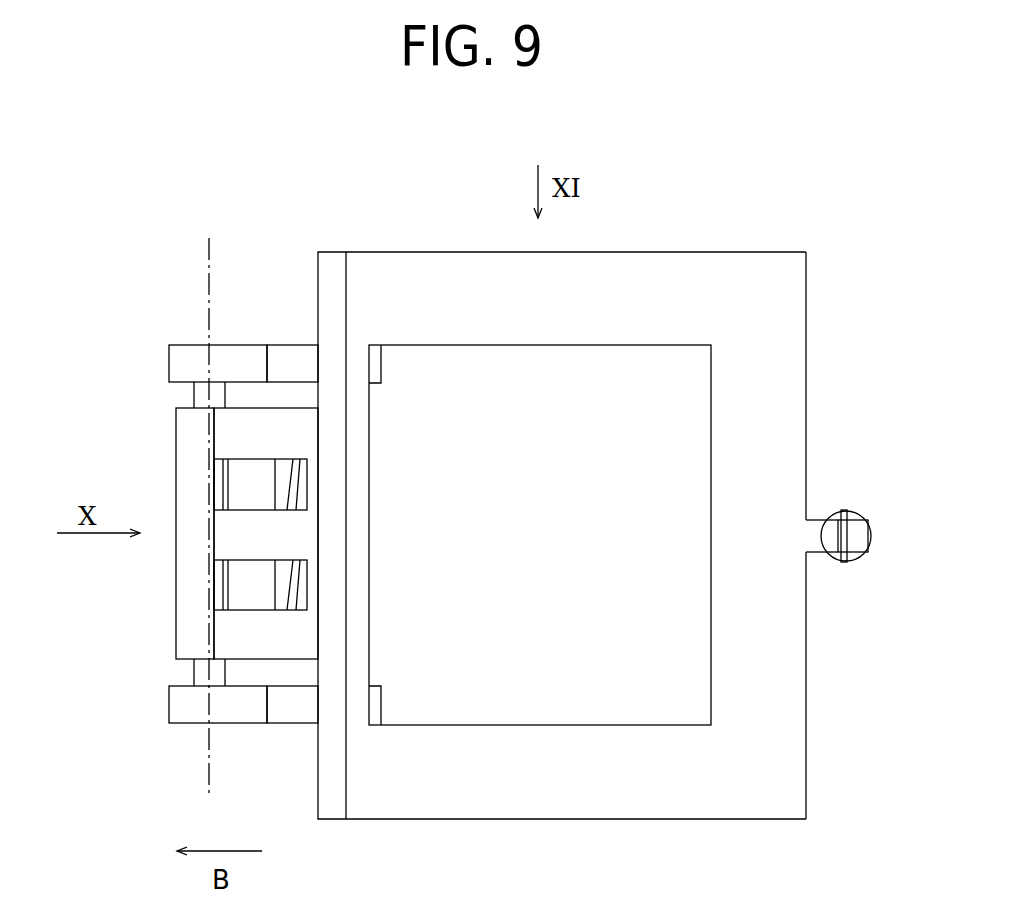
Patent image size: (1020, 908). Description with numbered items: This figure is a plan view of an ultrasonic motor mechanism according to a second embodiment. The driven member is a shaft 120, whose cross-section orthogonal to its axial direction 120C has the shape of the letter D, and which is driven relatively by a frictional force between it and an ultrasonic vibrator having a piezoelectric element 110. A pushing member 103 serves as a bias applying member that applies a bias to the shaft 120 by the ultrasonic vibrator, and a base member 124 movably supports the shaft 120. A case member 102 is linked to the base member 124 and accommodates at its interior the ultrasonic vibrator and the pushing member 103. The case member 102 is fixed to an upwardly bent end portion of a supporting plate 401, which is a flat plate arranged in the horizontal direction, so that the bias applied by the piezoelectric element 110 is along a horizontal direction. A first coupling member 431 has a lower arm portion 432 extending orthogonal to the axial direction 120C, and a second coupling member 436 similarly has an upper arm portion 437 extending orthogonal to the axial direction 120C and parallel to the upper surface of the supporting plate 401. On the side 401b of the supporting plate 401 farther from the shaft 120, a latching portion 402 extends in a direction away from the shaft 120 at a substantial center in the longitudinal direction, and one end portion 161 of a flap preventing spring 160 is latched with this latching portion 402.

The supporting plate 401 is at (334, 262).
The side of the supporting plate 401b is at (808, 280).
The latching portion 402 is at (816, 543).
The flap preventing spring 160 is at (852, 562).
The one end portion of the flap preventing spring 161 is at (848, 533).
The first coupling member 431 is at (197, 355).
The lower arm portion 432 is at (292, 355).
The second coupling member 436 is at (195, 715).
The upper arm portion 437 is at (291, 715).
The shaft 120 is at (205, 672).
The axial direction 120C is at (207, 257).
The base member 124 is at (190, 624).
The case member 102 is at (227, 434).
The piezoelectric element 110 is at (250, 481).
The pushing member 103 is at (290, 587).